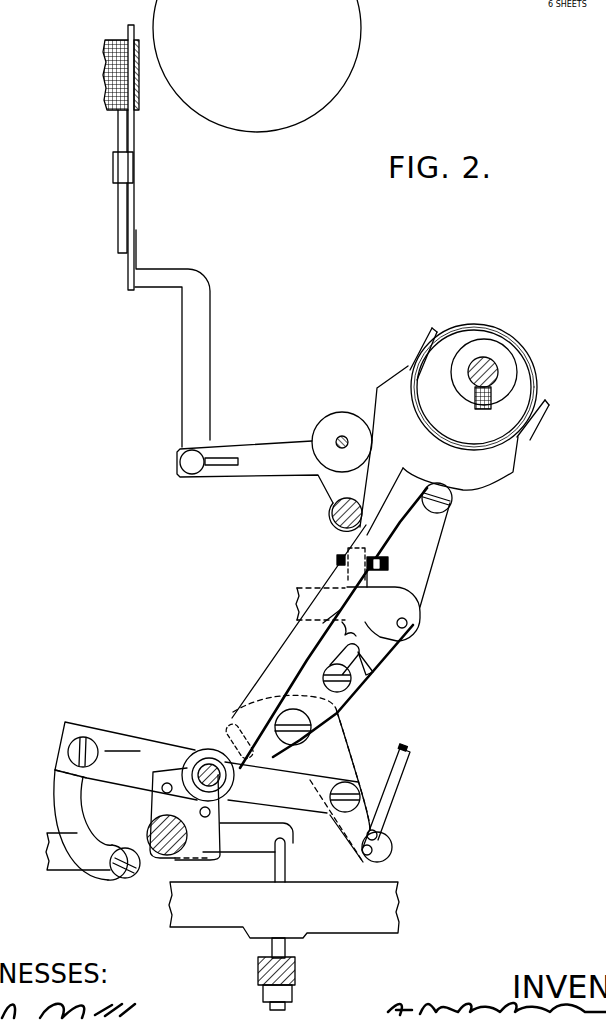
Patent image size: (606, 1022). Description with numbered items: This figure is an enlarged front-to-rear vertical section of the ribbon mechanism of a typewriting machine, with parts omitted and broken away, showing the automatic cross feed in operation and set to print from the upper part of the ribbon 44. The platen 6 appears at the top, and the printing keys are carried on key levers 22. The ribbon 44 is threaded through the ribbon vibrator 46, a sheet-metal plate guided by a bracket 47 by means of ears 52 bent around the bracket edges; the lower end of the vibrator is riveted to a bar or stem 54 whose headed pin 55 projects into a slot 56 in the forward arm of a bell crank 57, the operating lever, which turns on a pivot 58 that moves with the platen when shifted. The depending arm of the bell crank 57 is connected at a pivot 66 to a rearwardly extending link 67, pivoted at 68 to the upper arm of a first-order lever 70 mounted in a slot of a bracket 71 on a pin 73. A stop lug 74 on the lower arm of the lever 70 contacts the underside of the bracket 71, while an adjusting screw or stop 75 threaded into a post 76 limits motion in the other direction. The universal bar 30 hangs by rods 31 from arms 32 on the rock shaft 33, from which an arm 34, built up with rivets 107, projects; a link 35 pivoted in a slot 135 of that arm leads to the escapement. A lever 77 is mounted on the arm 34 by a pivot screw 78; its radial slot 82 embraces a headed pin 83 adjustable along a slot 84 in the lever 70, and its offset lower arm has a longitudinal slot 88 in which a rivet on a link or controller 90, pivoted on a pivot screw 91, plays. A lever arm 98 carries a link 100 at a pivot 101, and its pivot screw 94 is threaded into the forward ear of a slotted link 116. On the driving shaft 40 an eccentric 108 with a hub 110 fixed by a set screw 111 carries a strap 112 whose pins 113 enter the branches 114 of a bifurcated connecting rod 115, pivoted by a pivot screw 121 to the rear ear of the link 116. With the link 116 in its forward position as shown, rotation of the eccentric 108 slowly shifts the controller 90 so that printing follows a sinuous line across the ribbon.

The platen 6 is at (264, 132).
The key levers 22 is at (210, 925).
The universal bar 30 is at (296, 964).
The rods 31 is at (283, 860).
The arms 32 is at (237, 850).
The rock shaft 33 is at (183, 814).
The arm 34 is at (343, 740).
The link 35 is at (403, 763).
The driving shaft 40 is at (493, 363).
The ribbon 44 is at (110, 95).
The ribbon vibrator 46 is at (128, 30).
The bracket 47 is at (118, 237).
The ears 52 is at (132, 168).
The bar or stem 54 is at (165, 272).
The headed pin 55 is at (190, 472).
The slot 56 is at (229, 465).
The bell crank 57 is at (258, 445).
The pivot 58 is at (345, 442).
The pivot 66 is at (343, 506).
The link 67 is at (373, 493).
The pivot 68 is at (452, 499).
The lever 70 is at (440, 556).
The bracket 71 is at (307, 586).
The pin 73 is at (383, 614).
The stop lug 74 is at (323, 623).
The adjusting screw or stop 75 is at (385, 560).
The post 76 is at (355, 550).
The lever 77 is at (343, 691).
The pivot screw 78 is at (305, 718).
The radial slot 82 is at (370, 675).
The headed pin 83 is at (348, 632).
The slot 84 is at (358, 645).
The longitudinal slot 88 is at (238, 724).
The link or controller 90 is at (291, 787).
The pivot screw 91 is at (355, 785).
The pivot screw 94 is at (88, 740).
The lever arm 98 is at (75, 865).
The link 100 is at (60, 815).
The pivot 101 is at (125, 868).
The rivets 107 is at (197, 811).
The eccentric 108 is at (472, 330).
The hub 110 is at (460, 387).
The set screw 111 is at (478, 410).
The strap 112 is at (535, 375).
The pins 113 is at (418, 345).
The branches 114 is at (434, 329).
The connecting rod 115 is at (271, 668).
The link 116 is at (146, 735).
The pivot screw 121 is at (213, 760).
The slot 135 is at (365, 855).